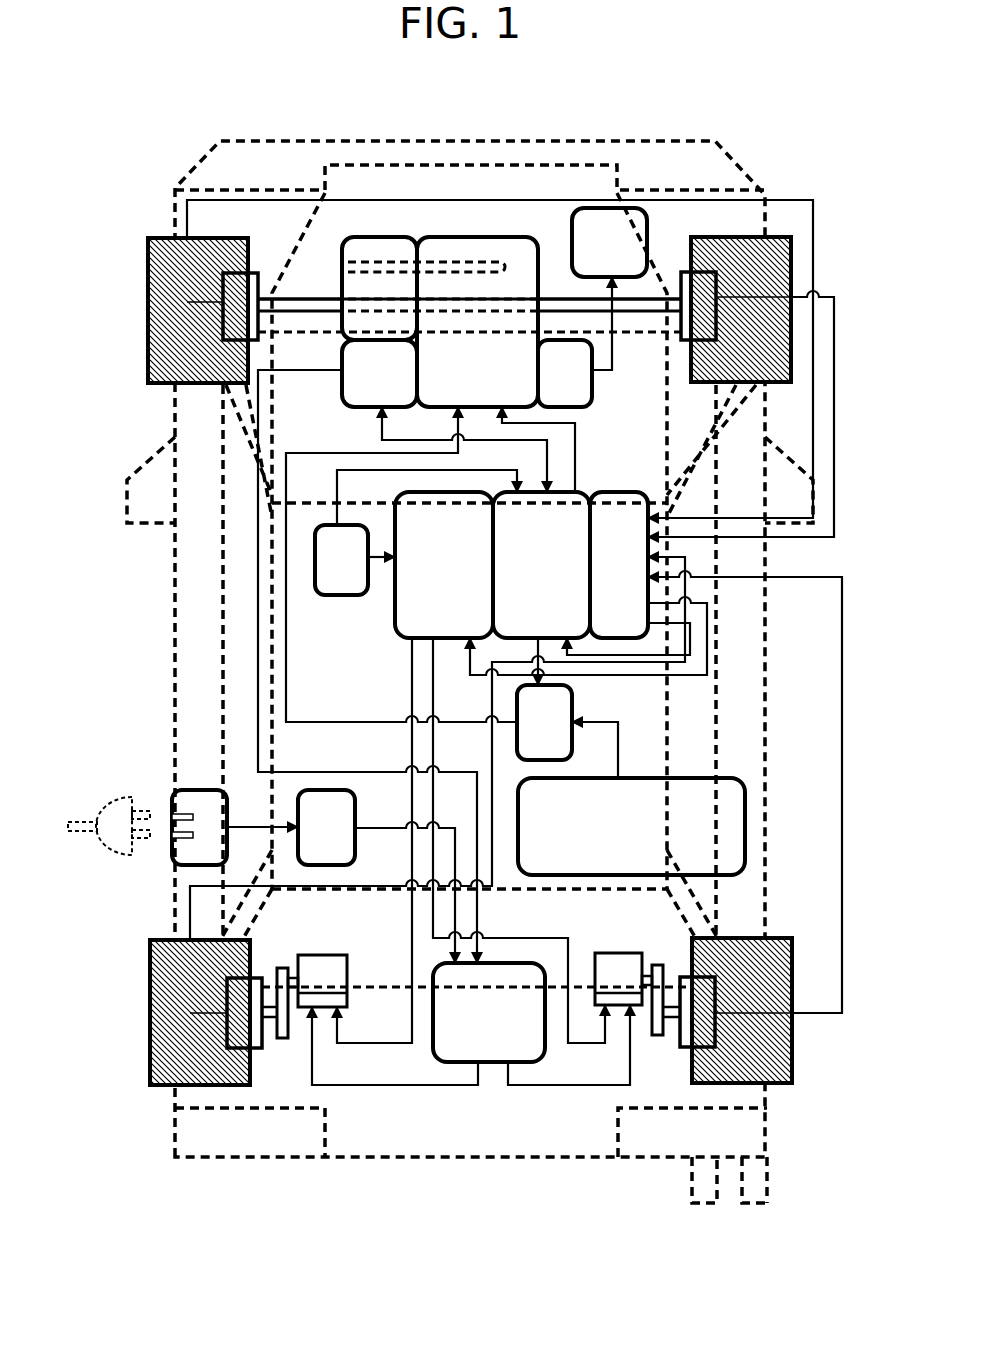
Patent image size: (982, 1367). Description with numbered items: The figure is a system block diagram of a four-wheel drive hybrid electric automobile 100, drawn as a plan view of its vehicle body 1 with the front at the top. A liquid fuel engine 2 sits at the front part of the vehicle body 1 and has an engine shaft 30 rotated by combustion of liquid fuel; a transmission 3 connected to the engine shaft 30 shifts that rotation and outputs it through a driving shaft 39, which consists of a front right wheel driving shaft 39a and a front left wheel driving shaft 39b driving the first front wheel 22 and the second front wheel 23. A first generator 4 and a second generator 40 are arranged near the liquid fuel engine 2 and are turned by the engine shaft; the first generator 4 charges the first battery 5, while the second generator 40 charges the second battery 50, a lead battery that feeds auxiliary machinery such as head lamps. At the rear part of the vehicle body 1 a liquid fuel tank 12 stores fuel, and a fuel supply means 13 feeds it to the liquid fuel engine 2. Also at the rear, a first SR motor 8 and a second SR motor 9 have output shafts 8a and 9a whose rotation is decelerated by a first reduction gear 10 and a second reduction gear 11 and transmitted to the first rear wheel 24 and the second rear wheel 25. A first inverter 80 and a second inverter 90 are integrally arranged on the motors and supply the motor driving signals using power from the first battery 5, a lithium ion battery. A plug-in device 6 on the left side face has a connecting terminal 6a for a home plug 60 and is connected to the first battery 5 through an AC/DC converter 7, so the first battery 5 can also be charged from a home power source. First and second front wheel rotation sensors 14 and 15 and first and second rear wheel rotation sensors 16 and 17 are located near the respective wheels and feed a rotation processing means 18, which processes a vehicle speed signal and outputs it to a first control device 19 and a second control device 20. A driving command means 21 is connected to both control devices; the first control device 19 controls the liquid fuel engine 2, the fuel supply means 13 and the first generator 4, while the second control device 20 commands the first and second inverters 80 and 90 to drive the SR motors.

The vehicle body 1 is at (592, 138).
The four-wheel drive hybrid electric automobile 100 is at (743, 112).
The liquid fuel engine 2 is at (518, 258).
The transmission 3 is at (392, 237).
The first generator 4 is at (376, 372).
The engine shaft 30 is at (455, 262).
The driving shaft 39 is at (108, 46).
The front right wheel driving shaft 39a is at (307, 303).
The front left wheel driving shaft 39b is at (562, 302).
The second generator 40 is at (563, 392).
The second battery 50 is at (628, 253).
The second front wheel rotation sensor 15 is at (257, 300).
The first front wheel rotation sensor 14 is at (688, 281).
The second front wheel 23 is at (163, 283).
The first front wheel 22 is at (767, 253).
The second rear wheel 25 is at (190, 985).
The first rear wheel 24 is at (780, 997).
The driving command means 21 is at (347, 557).
The second control device 20 is at (417, 625).
The first control device 19 is at (568, 527).
The rotation processing means 18 is at (617, 527).
The fuel supply means 13 is at (537, 735).
The liquid fuel tank 12 is at (645, 830).
The plug-in device 6 is at (200, 800).
The connecting terminal 6a is at (172, 838).
The home plug 60 is at (110, 825).
The AC/DC converter 7 is at (333, 815).
The first battery 5 is at (473, 1013).
The second SR motor 9 is at (336, 983).
The second inverter 90 is at (313, 977).
The output shaft 9a is at (293, 975).
The second reduction gear 11 is at (283, 1040).
The second rear wheel rotation sensor 17 is at (262, 1035).
The first SR motor 8 is at (607, 972).
The first inverter 80 is at (606, 977).
The output shaft 8a is at (655, 965).
The first reduction gear 10 is at (658, 1035).
The first rear wheel rotation sensor 16 is at (683, 1047).